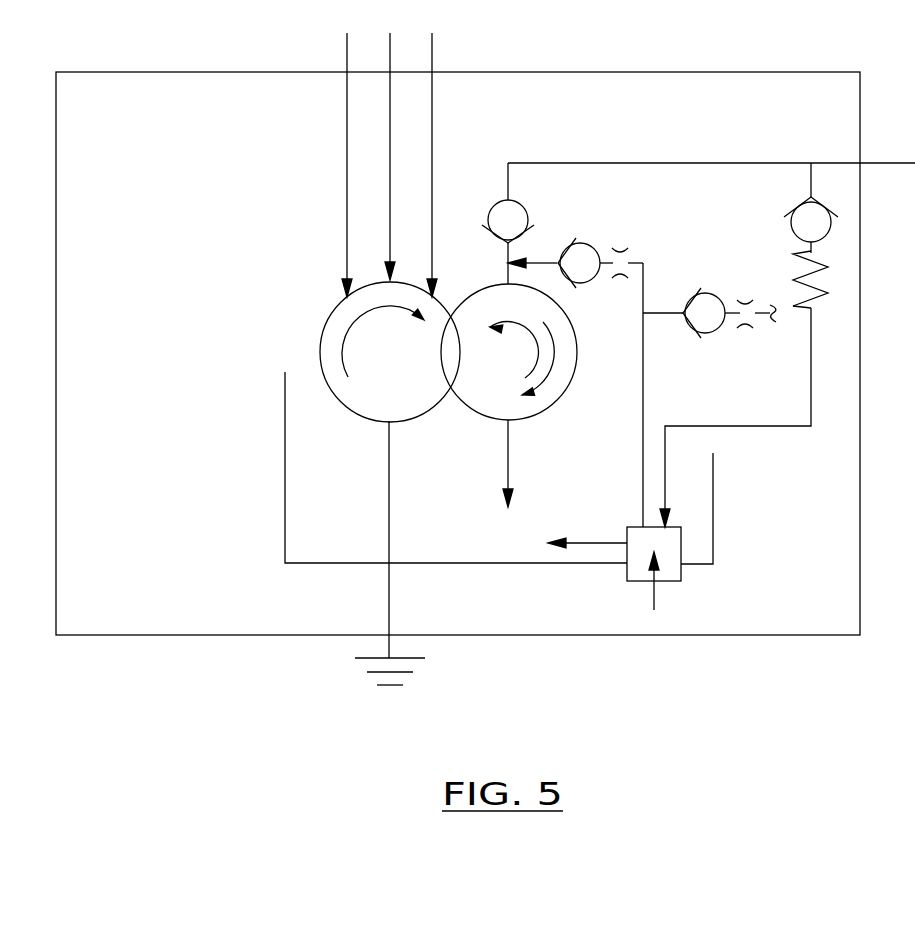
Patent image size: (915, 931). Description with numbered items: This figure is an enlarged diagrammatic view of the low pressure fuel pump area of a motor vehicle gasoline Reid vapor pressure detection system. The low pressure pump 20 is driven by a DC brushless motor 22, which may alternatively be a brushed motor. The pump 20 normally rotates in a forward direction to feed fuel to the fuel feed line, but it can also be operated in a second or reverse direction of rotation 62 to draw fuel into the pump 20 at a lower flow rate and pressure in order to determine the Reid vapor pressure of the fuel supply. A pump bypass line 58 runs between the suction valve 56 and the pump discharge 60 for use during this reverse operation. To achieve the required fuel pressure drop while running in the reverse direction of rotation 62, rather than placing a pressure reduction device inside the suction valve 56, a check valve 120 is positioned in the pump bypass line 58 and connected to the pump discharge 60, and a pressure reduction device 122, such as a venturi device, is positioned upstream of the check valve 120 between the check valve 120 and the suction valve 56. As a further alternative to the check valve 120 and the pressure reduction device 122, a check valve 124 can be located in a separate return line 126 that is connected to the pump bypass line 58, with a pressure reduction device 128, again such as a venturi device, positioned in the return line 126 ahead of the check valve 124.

The low pressure pump 20 is at (530, 403).
The DC brushless motor 22 is at (403, 402).
The suction valve 56 is at (633, 571).
The pump bypass line 58 is at (643, 405).
The pump discharge 60 is at (508, 262).
The reverse direction of rotation 62 is at (538, 353).
The check valve 120 is at (602, 230).
The pressure reduction device 122 is at (622, 246).
The check valve 124 is at (722, 292).
The return line 126 is at (672, 314).
The pressure reduction device 128 is at (746, 337).